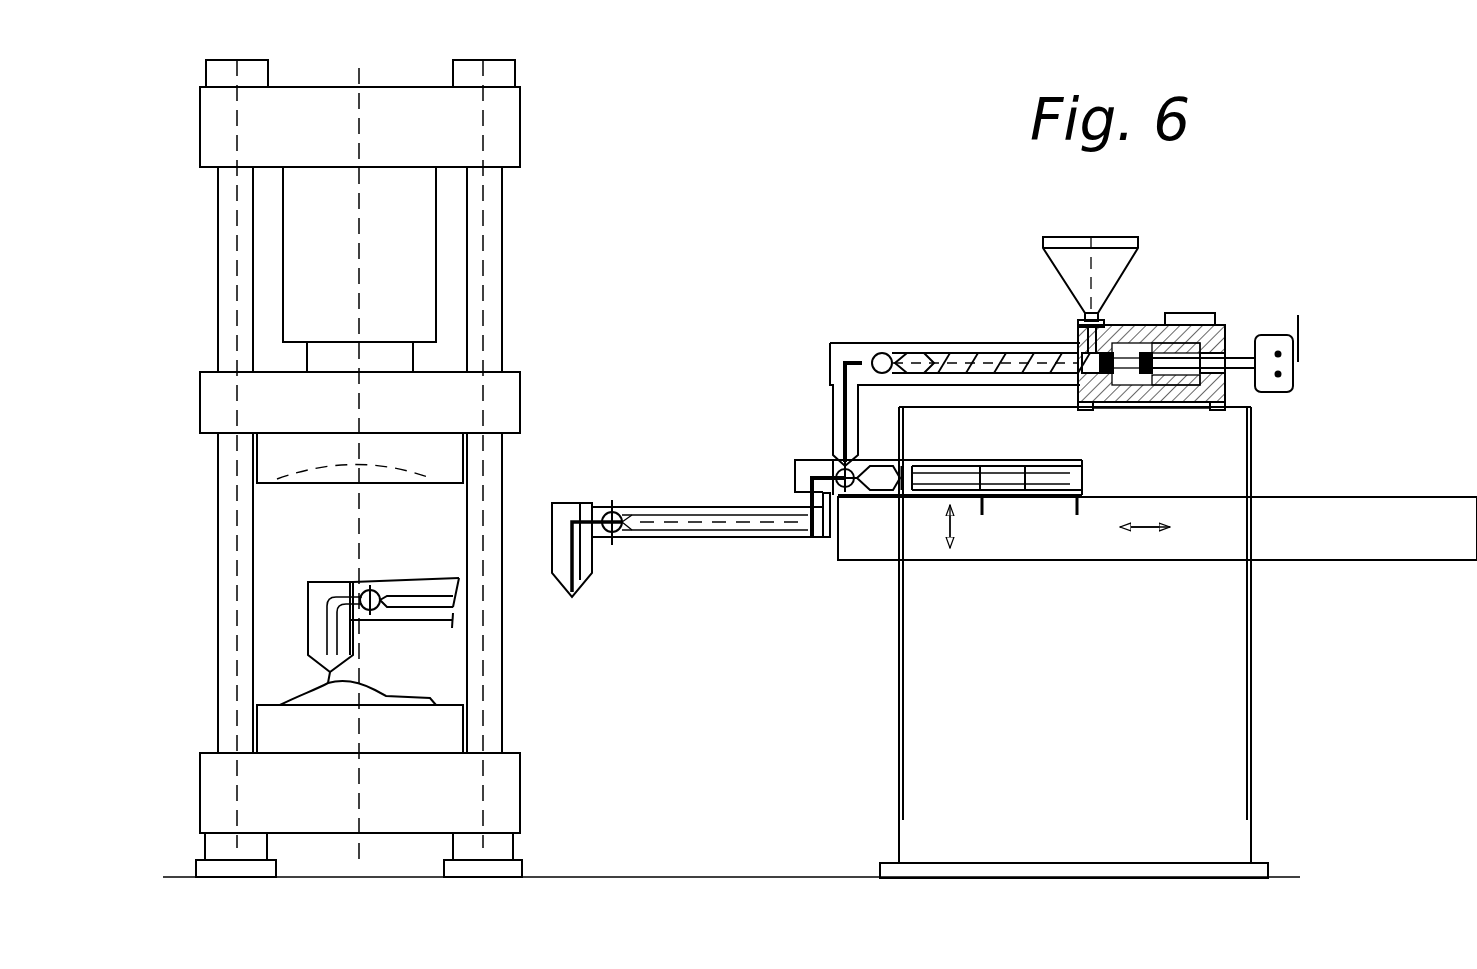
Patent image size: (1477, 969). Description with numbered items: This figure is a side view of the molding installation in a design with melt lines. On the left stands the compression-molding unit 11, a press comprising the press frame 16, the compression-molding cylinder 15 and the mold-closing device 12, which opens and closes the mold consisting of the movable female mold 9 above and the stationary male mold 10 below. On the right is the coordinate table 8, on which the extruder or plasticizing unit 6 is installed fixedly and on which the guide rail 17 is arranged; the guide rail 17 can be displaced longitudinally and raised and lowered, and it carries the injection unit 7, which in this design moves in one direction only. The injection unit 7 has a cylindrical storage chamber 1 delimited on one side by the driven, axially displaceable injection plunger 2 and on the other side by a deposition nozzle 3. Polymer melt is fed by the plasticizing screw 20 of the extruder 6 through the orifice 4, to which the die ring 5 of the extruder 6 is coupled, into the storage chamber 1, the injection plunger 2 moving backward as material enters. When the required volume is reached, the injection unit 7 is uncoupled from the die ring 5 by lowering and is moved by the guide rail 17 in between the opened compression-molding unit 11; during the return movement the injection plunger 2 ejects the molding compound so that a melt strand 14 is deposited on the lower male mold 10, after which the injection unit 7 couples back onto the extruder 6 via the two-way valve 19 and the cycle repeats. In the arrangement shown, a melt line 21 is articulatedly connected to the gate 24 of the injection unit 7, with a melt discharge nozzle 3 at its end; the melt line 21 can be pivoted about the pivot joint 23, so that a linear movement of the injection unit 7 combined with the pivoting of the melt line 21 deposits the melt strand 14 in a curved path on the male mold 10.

The storage chamber 1 is at (890, 487).
The injection plunger 2 is at (912, 490).
The deposition nozzle 3 is at (580, 578).
The orifice 4 is at (840, 462).
The die ring 5 is at (837, 400).
The plasticizing unit 6 is at (868, 322).
The injection unit 7 is at (1018, 528).
The coordinate table 8 is at (1190, 648).
The female mold 9 is at (283, 450).
The male mold 10 is at (283, 724).
The compression-molding unit 11 is at (578, 166).
The mold-closing device 12 is at (500, 400).
The melt strand 14 is at (325, 681).
The compression-molding cylinder 15 is at (400, 285).
The press frame 16 is at (237, 215).
The guide rail 17 is at (1190, 545).
The two-way valve 19 is at (812, 464).
The plasticizing screw 20 is at (952, 365).
The melt line 21 is at (695, 535).
The pivot joint 23 is at (800, 505).
The gate 24 is at (820, 540).